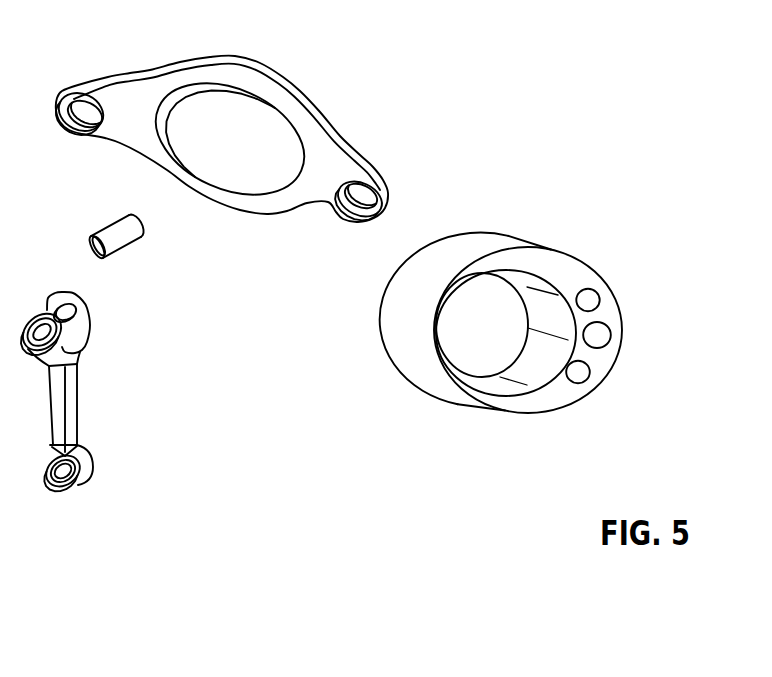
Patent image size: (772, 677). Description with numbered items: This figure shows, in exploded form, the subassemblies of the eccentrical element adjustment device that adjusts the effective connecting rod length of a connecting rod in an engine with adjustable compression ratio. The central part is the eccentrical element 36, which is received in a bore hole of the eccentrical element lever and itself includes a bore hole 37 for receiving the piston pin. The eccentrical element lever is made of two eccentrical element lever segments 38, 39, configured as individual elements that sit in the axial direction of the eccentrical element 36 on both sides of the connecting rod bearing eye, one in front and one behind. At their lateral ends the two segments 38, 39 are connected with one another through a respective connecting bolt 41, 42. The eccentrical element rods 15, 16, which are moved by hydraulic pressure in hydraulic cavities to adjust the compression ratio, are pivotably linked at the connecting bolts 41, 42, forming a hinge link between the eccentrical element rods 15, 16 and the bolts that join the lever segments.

The eccentrical element rod 15 is at (98, 392).
The eccentrical element rod 16 is at (68, 400).
The eccentrical element 36 is at (520, 333).
The bore hole 37 is at (534, 366).
The eccentrical element lever segment 38 is at (227, 140).
The eccentrical element lever segment 39 is at (324, 116).
The connecting bolt 41 is at (103, 210).
The connecting bolt 42 is at (106, 232).